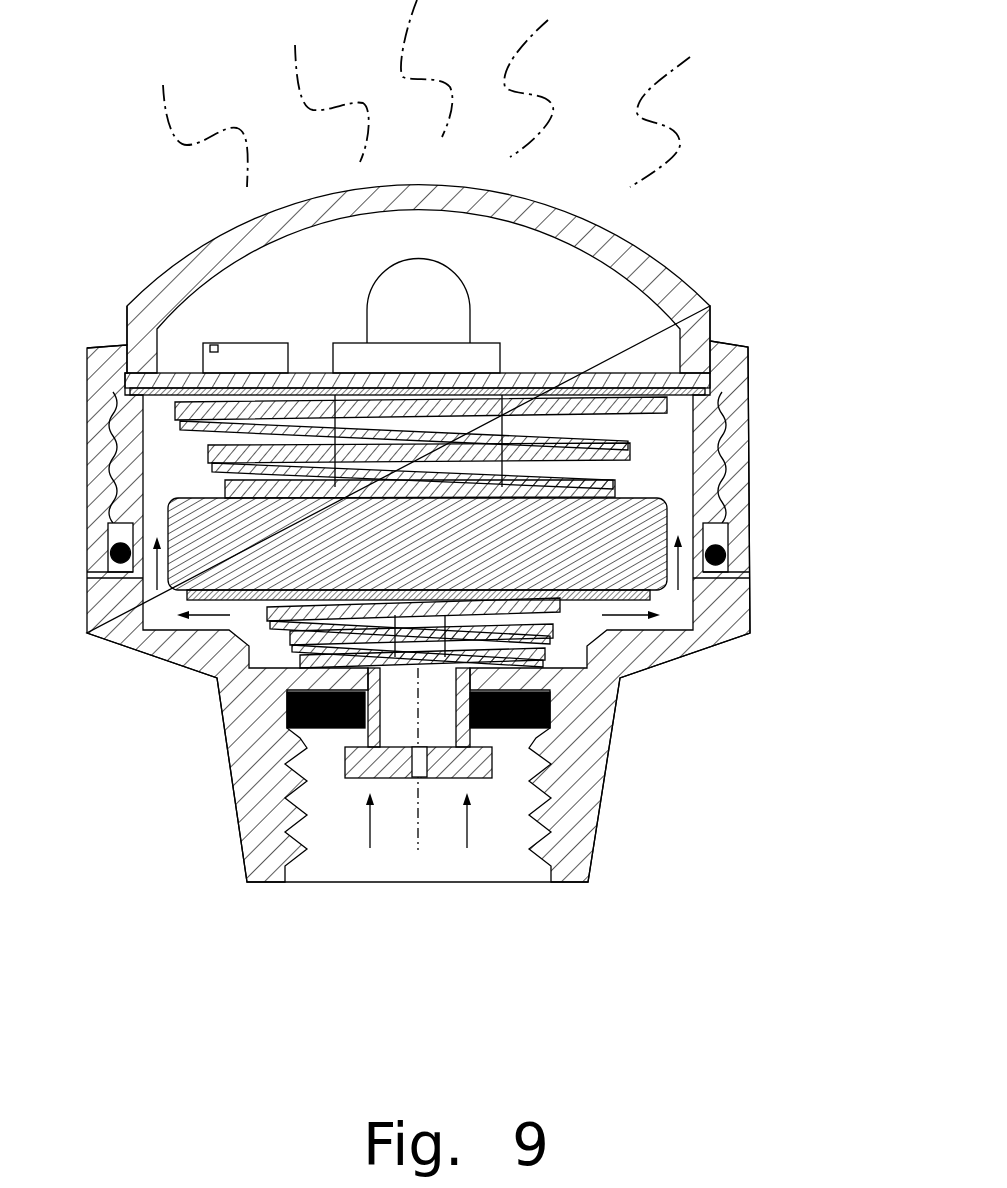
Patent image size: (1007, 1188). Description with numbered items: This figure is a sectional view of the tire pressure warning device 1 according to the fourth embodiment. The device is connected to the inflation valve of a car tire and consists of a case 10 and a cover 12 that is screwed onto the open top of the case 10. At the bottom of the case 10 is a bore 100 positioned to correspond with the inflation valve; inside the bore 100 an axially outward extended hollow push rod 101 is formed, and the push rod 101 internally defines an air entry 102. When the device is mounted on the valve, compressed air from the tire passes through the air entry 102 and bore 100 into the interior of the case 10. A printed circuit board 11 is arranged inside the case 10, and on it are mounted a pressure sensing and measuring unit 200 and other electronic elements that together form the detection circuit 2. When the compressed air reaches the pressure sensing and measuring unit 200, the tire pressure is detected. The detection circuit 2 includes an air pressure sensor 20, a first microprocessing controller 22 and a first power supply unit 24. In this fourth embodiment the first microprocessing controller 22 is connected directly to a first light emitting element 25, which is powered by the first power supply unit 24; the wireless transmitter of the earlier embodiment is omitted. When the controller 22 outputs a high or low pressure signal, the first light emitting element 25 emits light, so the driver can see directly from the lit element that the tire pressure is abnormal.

The tire pressure warning device 1 is at (722, 673).
The case 10 is at (723, 612).
The bore 100 is at (500, 837).
The hollow push rod 101 is at (347, 755).
The air entry 102 is at (418, 766).
The printed circuit board 11 is at (665, 388).
The cover 12 is at (742, 426).
The detection circuit 2 is at (185, 368).
The air pressure sensor 20 is at (318, 400).
The pressure sensing and measuring unit 200 is at (535, 373).
The first microprocessing controller 22 is at (243, 343).
The first power supply unit 24 is at (672, 503).
The first light emitting element 25 is at (500, 343).